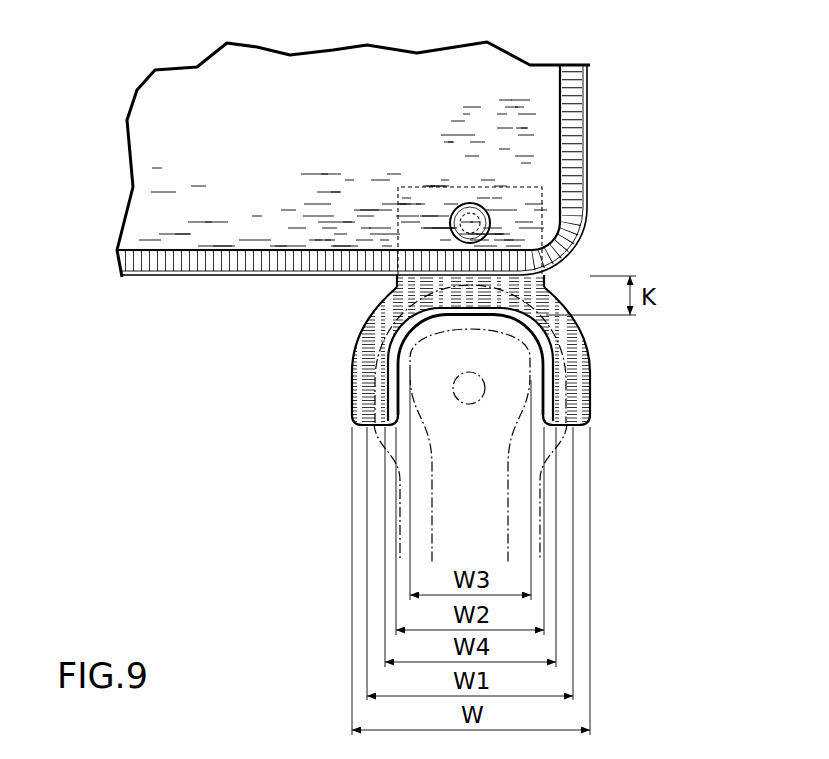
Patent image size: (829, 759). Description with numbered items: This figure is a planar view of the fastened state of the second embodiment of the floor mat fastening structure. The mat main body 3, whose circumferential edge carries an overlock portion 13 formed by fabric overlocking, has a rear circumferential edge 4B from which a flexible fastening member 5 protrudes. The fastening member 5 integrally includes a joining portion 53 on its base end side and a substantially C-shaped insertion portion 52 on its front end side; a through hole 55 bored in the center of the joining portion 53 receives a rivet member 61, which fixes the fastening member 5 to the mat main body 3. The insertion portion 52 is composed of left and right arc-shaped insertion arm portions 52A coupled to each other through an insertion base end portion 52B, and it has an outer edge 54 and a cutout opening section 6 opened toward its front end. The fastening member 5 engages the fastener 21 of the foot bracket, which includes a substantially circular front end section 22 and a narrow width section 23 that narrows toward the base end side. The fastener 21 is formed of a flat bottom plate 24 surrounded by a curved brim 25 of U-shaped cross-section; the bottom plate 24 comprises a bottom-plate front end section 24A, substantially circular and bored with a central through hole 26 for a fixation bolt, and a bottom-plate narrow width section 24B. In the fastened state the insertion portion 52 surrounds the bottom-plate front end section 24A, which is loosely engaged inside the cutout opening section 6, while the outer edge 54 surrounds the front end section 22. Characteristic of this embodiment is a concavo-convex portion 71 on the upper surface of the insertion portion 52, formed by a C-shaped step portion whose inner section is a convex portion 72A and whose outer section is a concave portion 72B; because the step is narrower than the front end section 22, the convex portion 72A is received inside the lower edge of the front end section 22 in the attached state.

The mat main body 3 is at (305, 133).
The overlock portion 13 is at (140, 263).
The rear circumferential edge 4B is at (197, 273).
The joining portion 53 is at (540, 190).
The rivet member 61 is at (457, 203).
The through hole 55 is at (483, 205).
The fastening member 5 is at (591, 408).
The cutout opening section 6 is at (580, 352).
The fastener 21 is at (392, 307).
The front end section 22 is at (360, 350).
The concave portion 72B is at (583, 337).
The outer edge 54 is at (352, 374).
The concavo-convex portion 71 is at (590, 370).
The convex portion 72A is at (593, 395).
The insertion arm portion 52A is at (350, 417).
The insertion portion 52 is at (592, 383).
The insertion base end portion 52B is at (447, 302).
The curved brim 25 is at (375, 380).
The bottom plate 24 is at (483, 453).
The bottom-plate front end section 24A is at (425, 395).
The bottom-plate narrow width section 24B is at (447, 523).
The through hole 26 is at (457, 402).
The narrow width section 23 is at (540, 527).